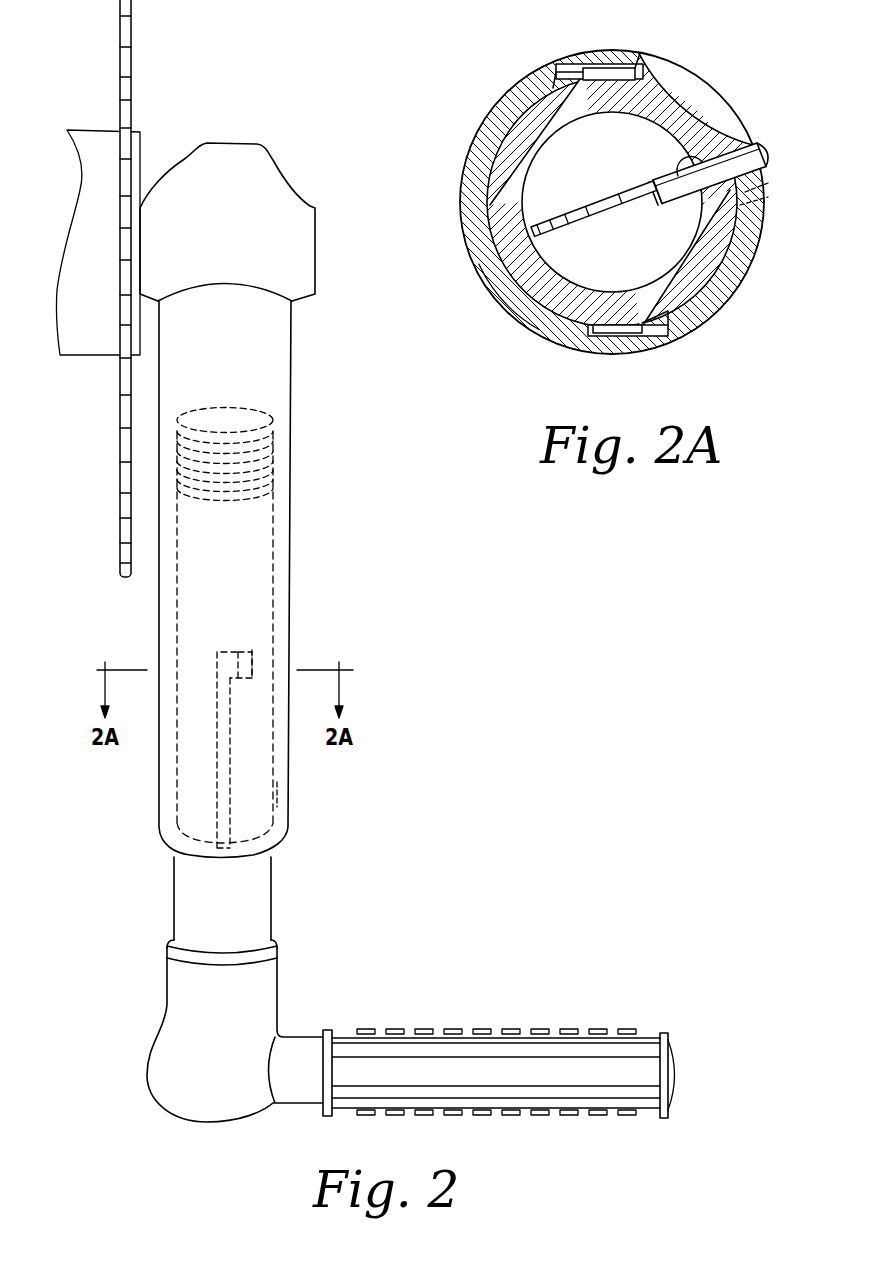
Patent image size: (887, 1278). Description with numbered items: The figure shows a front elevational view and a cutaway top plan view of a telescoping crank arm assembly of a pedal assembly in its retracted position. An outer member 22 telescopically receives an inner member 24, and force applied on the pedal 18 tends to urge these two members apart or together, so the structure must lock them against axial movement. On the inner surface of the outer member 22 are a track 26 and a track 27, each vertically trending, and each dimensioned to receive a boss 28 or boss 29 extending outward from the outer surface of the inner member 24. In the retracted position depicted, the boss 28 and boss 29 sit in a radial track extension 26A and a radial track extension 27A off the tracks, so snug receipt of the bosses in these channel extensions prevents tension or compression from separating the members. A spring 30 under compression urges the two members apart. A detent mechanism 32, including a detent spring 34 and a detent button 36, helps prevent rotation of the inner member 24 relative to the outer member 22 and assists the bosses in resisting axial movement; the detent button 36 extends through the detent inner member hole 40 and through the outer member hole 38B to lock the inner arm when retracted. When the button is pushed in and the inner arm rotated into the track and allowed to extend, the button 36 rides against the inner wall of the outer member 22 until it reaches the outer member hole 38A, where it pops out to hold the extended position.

In FIG. 2, the pedal 18 is at (513, 1027).
In FIG. 2, the outer member 22 is at (292, 612).
In FIG. 2A, the outer member 22 is at (723, 107).
In FIG. 2, the inner member 24 is at (270, 887).
In FIG. 2A, the inner member 24 is at (492, 110).
In FIG. 2, the track 26 is at (213, 782).
In FIG. 2A, the track 26 is at (613, 337).
In FIG. 2, the radial track extension 26A is at (255, 665).
In FIG. 2A, the radial track extension 26A is at (650, 338).
In FIG. 2A, the track 27 is at (625, 63).
In FIG. 2A, the radial track extension 27A is at (583, 66).
In FIG. 2, the boss 28 is at (243, 648).
In FIG. 2A, the boss 28 is at (673, 347).
In FIG. 2A, the boss 29 is at (563, 62).
In FIG. 2, the spring 30 is at (270, 473).
In FIG. 2A, the detent mechanism 32 is at (611, 250).
In FIG. 2A, the detent spring 34 is at (602, 203).
In FIG. 2A, the detent button 36 is at (697, 203).
In FIG. 2, the outer member hole 38A is at (275, 803).
In FIG. 2A, the outer member hole 38A is at (752, 197).
In FIG. 2A, the outer member hole 38B is at (765, 150).
In FIG. 2A, the detent inner member hole 40 is at (676, 173).